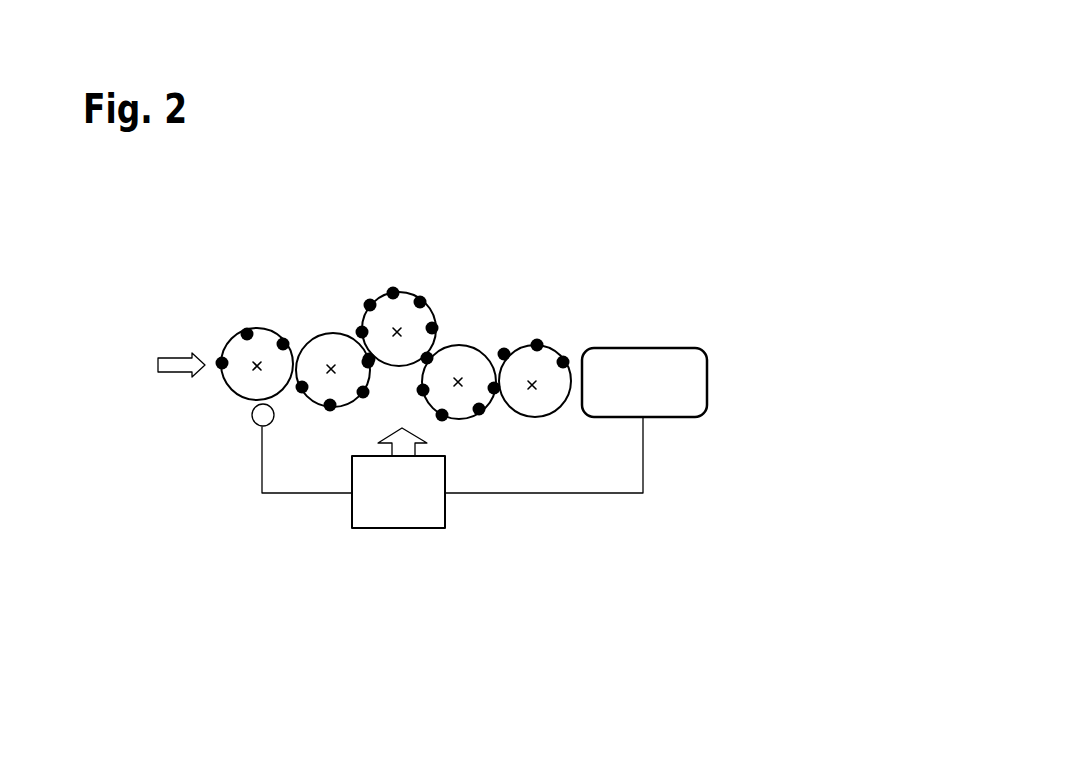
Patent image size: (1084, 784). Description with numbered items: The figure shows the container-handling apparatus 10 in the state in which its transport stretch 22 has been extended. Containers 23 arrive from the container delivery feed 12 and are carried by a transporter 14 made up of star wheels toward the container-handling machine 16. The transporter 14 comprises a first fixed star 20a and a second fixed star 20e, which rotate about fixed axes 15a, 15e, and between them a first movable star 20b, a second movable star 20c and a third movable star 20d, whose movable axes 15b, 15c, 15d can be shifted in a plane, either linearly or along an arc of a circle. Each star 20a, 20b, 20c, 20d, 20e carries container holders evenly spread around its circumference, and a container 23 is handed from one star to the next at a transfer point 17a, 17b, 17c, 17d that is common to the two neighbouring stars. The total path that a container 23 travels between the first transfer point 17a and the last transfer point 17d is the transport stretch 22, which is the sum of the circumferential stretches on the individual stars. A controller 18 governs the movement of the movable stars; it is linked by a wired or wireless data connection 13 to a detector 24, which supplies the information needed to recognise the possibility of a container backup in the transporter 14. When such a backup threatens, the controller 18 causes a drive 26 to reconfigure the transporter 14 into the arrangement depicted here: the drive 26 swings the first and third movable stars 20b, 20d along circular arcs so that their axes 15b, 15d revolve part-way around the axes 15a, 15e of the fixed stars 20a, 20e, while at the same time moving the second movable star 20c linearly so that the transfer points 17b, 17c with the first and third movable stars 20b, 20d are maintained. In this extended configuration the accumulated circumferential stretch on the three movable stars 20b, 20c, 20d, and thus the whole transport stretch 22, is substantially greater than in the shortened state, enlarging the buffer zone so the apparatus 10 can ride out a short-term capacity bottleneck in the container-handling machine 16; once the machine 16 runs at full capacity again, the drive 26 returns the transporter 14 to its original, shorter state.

The container-handling apparatus 10 is at (473, 152).
The container delivery feed 12 is at (156, 361).
The data connection 13 is at (293, 493).
The transporter 14 is at (296, 215).
The axis of first fixed star 15a is at (256, 371).
The axis of first movable star 15b is at (330, 364).
The axis of second movable star 15c is at (398, 326).
The axis of third movable star 15d is at (461, 389).
The axis of second fixed star 15e is at (537, 387).
The container-handling machine 16 is at (696, 365).
The first transfer point 17a is at (280, 340).
The second transfer point 17b is at (373, 367).
The third transfer point 17c is at (426, 354).
The fourth transfer point 17d is at (505, 349).
The controller 18 is at (375, 507).
The first fixed star 20a is at (231, 350).
The first movable star 20b is at (328, 382).
The second movable star 20c is at (364, 276).
The third movable star 20d is at (468, 326).
The second fixed star 20e is at (535, 343).
The transport stretch 22 is at (583, 319).
The container 23 is at (566, 366).
The detector 24 is at (252, 421).
The drive 26 is at (400, 435).